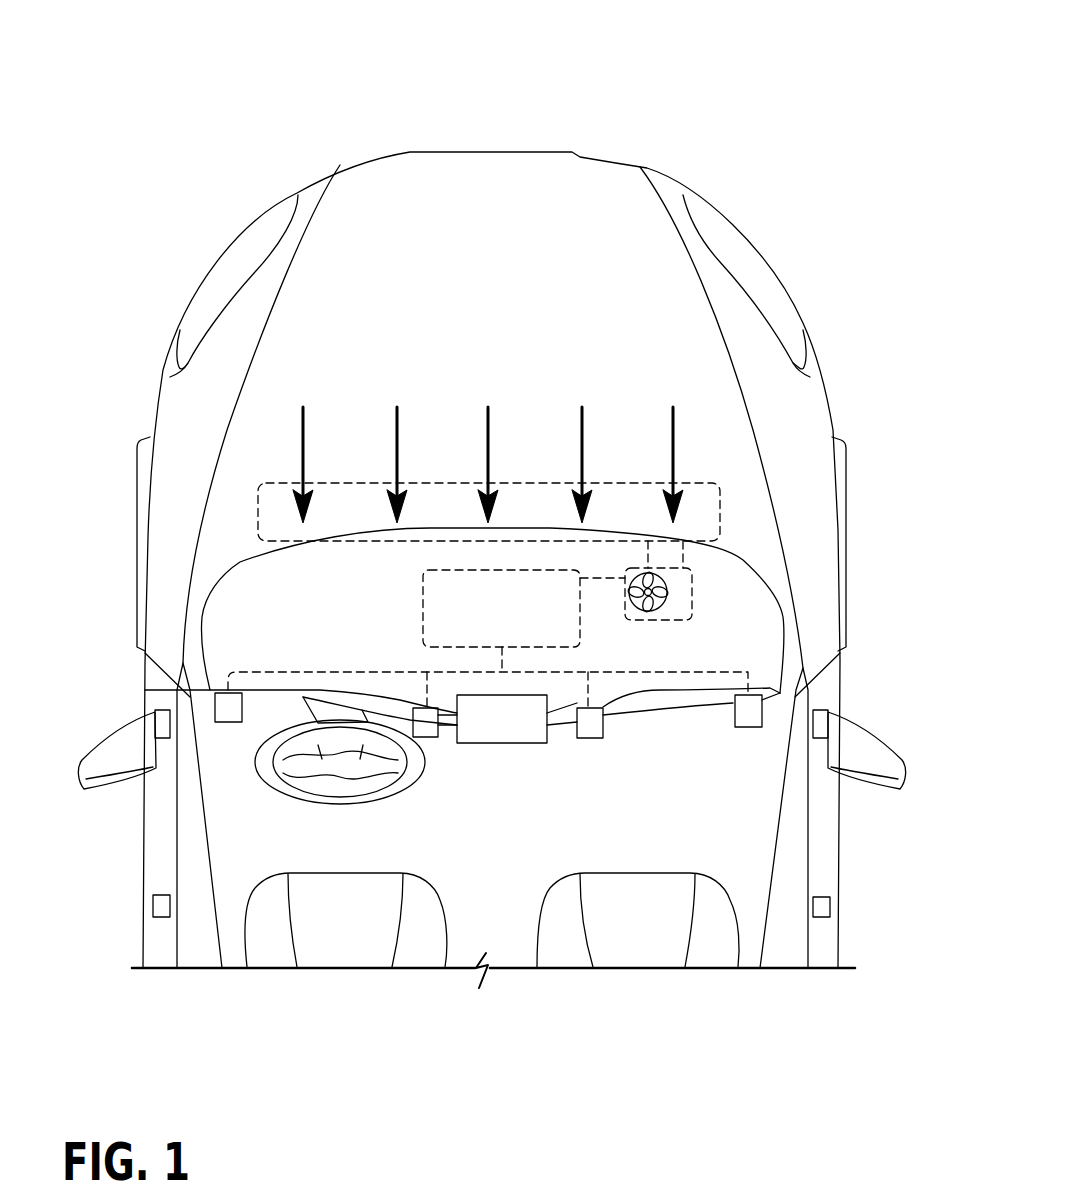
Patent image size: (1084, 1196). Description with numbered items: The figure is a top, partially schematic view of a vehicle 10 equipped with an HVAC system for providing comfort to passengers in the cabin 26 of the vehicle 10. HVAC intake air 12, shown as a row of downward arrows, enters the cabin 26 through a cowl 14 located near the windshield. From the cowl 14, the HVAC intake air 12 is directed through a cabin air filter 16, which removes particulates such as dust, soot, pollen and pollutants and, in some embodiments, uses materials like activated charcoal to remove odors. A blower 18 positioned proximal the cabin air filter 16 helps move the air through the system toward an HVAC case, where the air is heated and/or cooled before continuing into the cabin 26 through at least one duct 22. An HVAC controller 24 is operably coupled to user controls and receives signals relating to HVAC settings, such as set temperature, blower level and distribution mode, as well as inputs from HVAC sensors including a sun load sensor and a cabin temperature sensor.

The vehicle 10 is at (610, 102).
The HVAC intake air 12 is at (300, 408).
The cowl 14 is at (259, 508).
The cabin air filter 16 is at (692, 582).
The blower 18 is at (667, 603).
The duct 22 is at (213, 694).
The HVAC controller 24 is at (493, 743).
The cabin 26 is at (733, 767).